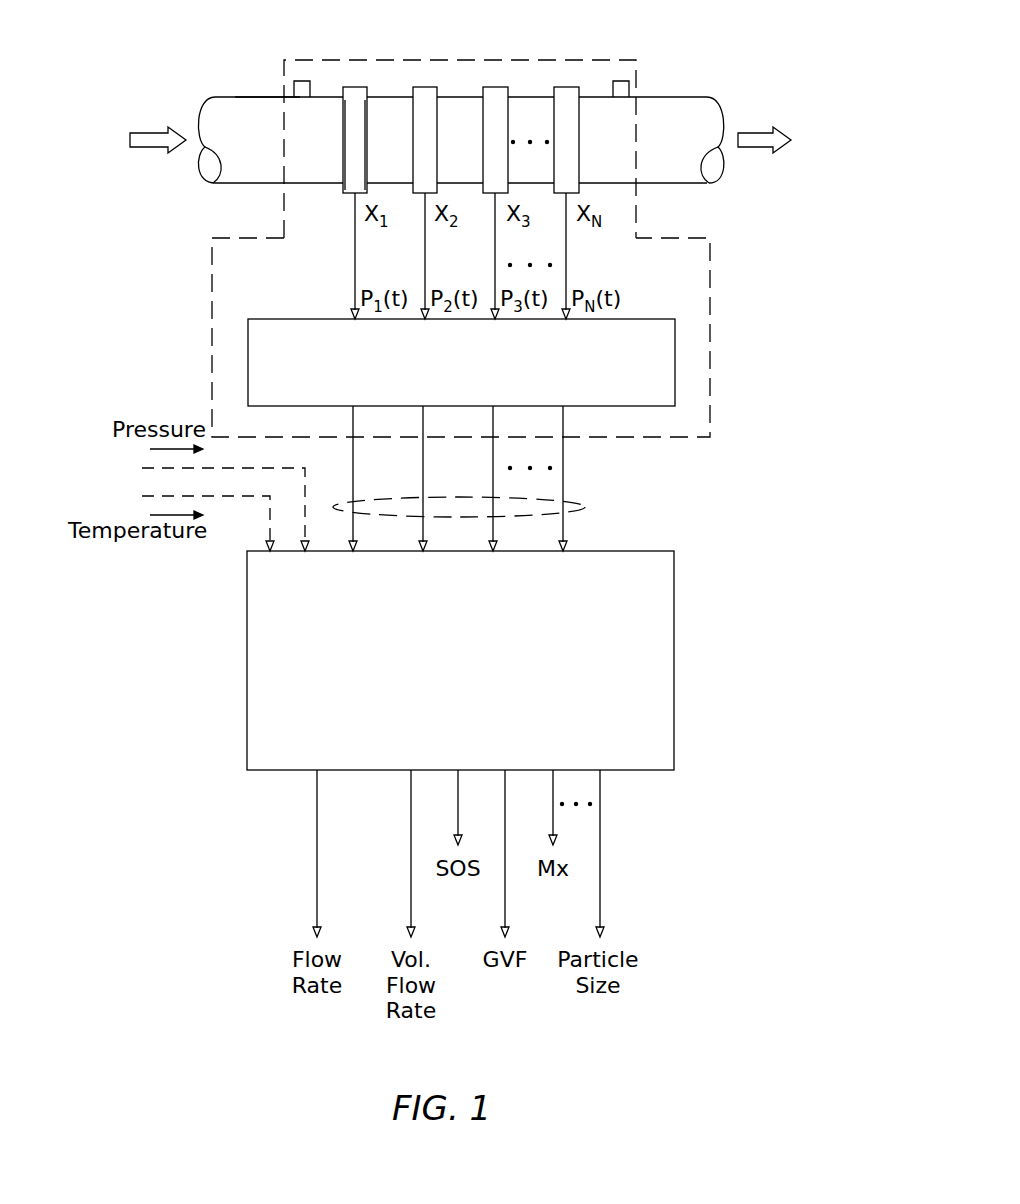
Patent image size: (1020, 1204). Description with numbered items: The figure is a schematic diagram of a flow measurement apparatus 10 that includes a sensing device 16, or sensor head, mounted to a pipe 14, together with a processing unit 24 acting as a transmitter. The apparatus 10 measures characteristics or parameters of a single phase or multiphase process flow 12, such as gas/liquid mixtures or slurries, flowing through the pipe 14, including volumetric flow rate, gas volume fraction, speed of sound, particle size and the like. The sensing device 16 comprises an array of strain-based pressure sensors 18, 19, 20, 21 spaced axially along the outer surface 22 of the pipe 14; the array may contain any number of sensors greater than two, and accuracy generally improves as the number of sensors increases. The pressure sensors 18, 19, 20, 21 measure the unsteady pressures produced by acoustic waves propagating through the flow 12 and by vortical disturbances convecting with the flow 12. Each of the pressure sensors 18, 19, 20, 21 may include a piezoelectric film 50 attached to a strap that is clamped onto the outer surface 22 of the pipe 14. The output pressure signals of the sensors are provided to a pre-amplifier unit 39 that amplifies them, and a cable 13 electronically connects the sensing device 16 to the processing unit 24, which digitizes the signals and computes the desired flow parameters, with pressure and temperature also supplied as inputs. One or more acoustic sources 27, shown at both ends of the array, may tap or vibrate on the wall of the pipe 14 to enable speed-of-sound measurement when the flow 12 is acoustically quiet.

The flow measurement apparatus 10 is at (760, 505).
The process flow 12 is at (147, 128).
The cable 13 is at (583, 501).
The pipe 14 is at (686, 184).
The sensing device 16 is at (646, 71).
The pressure sensor 18 is at (361, 87).
The pressure sensor 19 is at (431, 87).
The pressure sensor 20 is at (502, 87).
The pressure sensor 21 is at (570, 87).
The outer surface 22 is at (248, 158).
The processing unit 24 is at (674, 648).
The acoustic source 27 is at (302, 81).
The pre-amplifier unit 39 is at (675, 365).
The piezoelectric film 50 is at (353, 146).